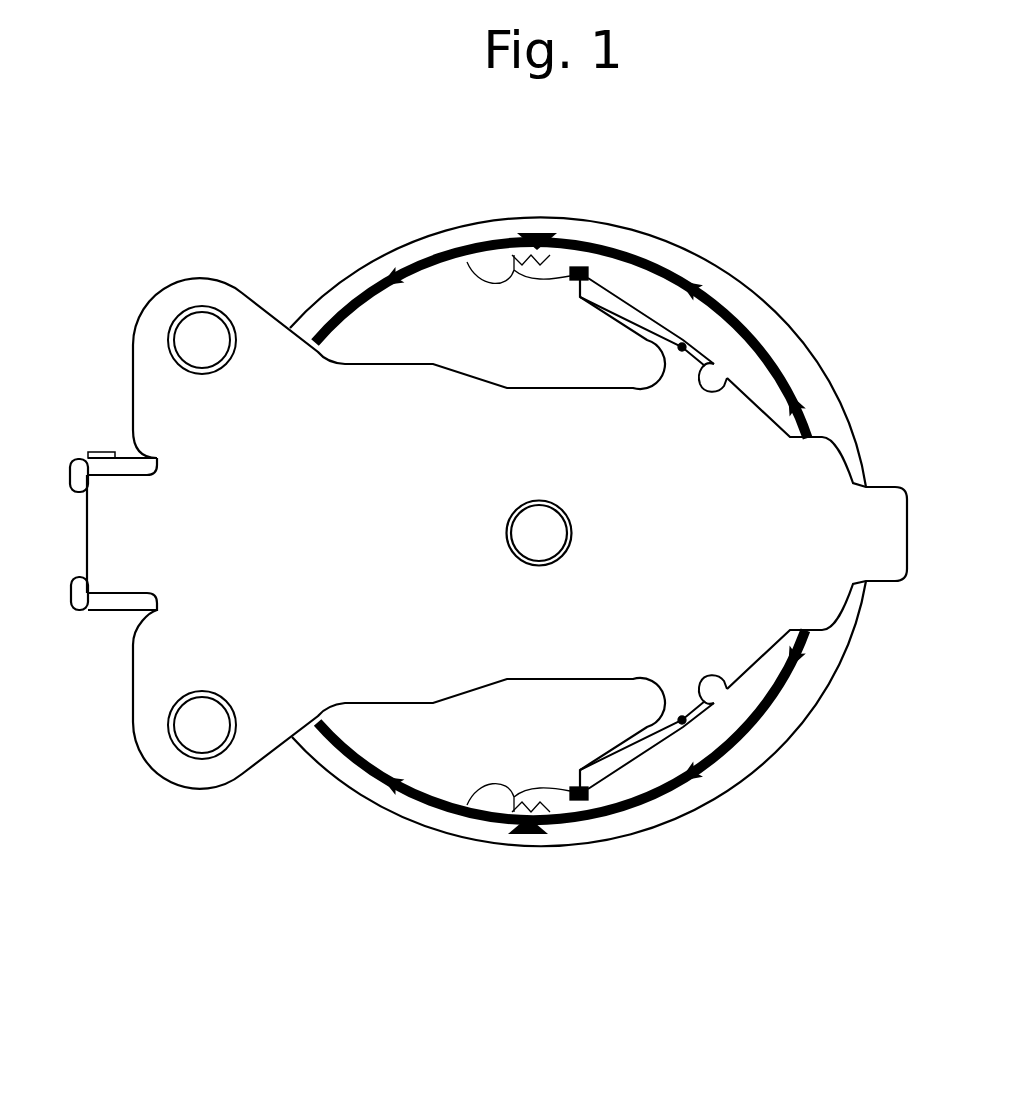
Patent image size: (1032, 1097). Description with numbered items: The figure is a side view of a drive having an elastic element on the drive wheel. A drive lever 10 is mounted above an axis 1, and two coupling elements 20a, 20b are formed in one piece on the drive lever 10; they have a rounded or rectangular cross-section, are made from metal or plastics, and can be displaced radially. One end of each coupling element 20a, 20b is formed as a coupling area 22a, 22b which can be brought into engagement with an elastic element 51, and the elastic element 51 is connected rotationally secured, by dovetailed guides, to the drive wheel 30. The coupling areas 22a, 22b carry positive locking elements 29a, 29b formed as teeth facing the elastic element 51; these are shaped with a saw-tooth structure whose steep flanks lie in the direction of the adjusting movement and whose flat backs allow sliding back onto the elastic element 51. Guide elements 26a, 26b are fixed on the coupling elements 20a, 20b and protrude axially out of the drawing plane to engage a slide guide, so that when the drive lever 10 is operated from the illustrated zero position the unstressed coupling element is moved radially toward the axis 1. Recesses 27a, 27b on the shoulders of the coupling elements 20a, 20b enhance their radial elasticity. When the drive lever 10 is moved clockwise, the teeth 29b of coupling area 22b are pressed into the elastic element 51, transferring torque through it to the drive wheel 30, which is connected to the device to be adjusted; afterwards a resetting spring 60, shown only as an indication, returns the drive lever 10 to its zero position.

The axis 1 is at (536, 537).
The drive lever 10 is at (322, 350).
The drive wheel 30 is at (347, 280).
The elastic element 51 is at (377, 262).
The coupling area 22a is at (462, 252).
The coupling area 22b is at (398, 818).
The positive locking element 29a is at (548, 232).
The positive locking element 29b is at (522, 808).
The guide element 26a is at (590, 266).
The guide element 26b is at (580, 800).
The coupling element 20a is at (684, 345).
The coupling element 20b is at (675, 725).
The recess 27a is at (718, 372).
The recess 27b is at (720, 695).
The resetting spring 60 is at (100, 603).